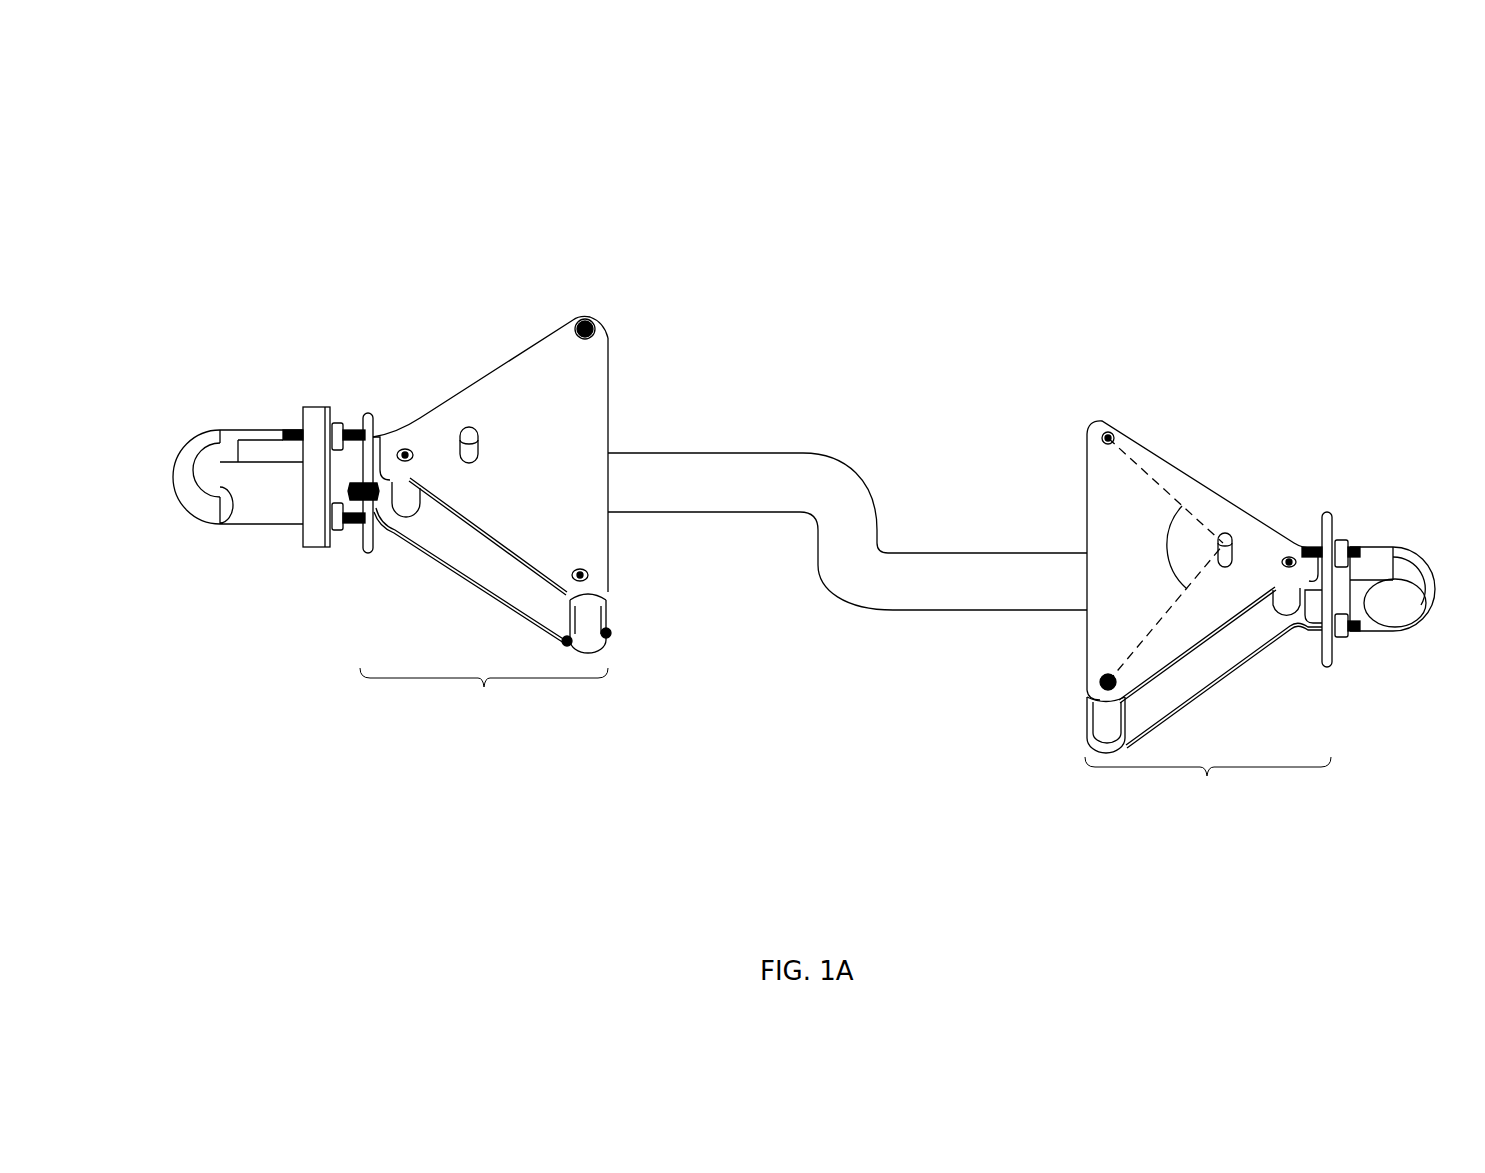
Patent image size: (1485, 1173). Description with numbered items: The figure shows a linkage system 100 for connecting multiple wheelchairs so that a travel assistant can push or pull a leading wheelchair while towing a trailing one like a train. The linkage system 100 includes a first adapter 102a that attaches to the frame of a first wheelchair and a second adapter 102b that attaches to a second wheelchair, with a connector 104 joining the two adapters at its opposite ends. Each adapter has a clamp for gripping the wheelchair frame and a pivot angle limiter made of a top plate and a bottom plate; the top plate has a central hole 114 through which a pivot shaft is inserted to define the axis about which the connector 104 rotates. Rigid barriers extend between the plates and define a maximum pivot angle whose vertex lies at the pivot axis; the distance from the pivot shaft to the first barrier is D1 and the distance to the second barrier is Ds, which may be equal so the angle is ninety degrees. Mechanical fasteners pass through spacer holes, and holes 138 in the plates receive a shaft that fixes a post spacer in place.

The linkage system 100 is at (196, 140).
The first adapter 102a is at (603, 298).
The second adapter 102b is at (1091, 394).
The connector 104 is at (691, 450).
The central hole 114 is at (465, 466).
The holes 138 is at (404, 449).
The first distance D1 is at (1143, 472).
The second distance Ds is at (1160, 618).